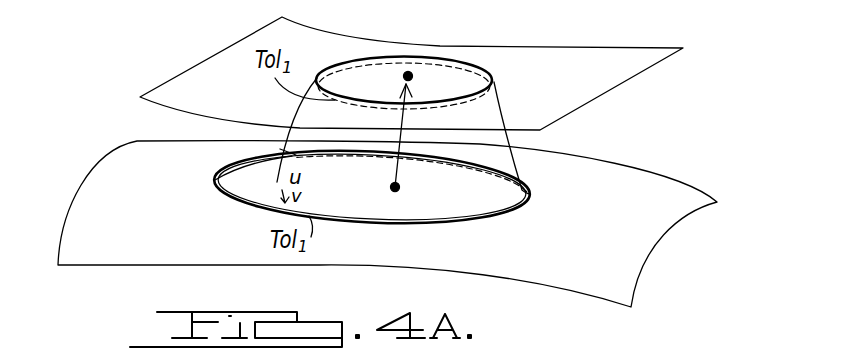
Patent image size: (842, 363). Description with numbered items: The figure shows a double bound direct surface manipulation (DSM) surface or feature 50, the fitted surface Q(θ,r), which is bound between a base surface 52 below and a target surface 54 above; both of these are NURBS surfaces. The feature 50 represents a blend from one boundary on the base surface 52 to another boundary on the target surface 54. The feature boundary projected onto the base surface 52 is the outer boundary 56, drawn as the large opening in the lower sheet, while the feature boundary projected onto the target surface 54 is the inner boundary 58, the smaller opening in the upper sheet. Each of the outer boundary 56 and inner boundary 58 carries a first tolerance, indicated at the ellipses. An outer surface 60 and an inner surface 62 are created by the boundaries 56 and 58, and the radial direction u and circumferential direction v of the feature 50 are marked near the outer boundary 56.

The double bound DSM surface or feature 50 is at (507, 141).
The base surface 52 is at (641, 239).
The target surface 54 is at (640, 62).
The outer boundary 56 is at (495, 216).
The inner boundary 58 is at (478, 70).
The outer surface 60 is at (470, 220).
The inner surface 62 is at (365, 72).